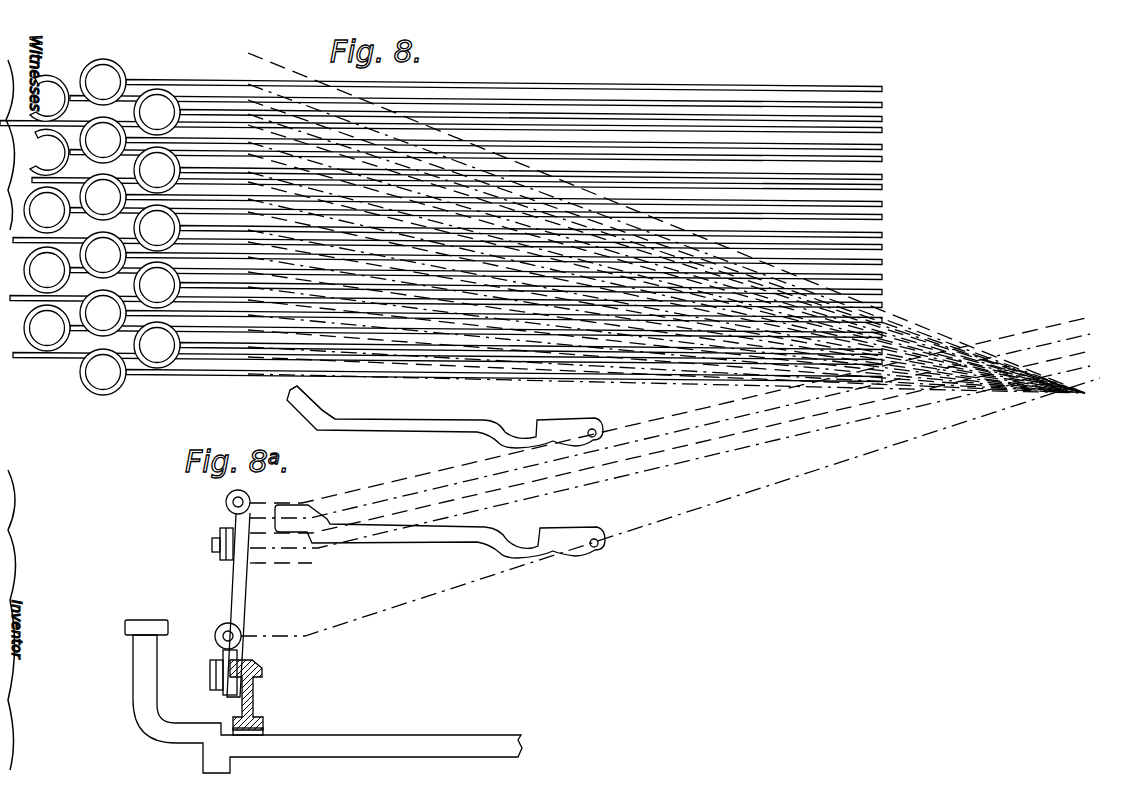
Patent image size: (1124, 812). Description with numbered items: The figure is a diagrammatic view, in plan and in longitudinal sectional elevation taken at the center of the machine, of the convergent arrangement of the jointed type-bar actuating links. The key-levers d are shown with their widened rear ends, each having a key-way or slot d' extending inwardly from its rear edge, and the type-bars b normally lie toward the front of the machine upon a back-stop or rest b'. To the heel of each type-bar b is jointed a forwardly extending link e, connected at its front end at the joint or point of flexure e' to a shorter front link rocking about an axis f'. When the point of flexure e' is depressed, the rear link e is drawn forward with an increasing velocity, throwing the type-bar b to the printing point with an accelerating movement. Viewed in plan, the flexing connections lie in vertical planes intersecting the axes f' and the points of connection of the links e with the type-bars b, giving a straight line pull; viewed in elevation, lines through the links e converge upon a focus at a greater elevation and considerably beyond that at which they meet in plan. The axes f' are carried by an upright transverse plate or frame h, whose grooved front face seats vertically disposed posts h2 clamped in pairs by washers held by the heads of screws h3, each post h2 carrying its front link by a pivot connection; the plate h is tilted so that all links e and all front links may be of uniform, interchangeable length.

In FIG. 8, the key-lever d is at (441, 219).
In FIG. 8A, the key-lever d is at (323, 696).
In FIG. 8, the key-way or slot d' is at (102, 227).
In FIG. 8, the axis f' is at (281, 400).
In FIG. 8A, the axis f' is at (220, 593).
In FIG. 8, the joint or point of flexure e' is at (666, 226).
In FIG. 8A, the joint or point of flexure e' is at (670, 533).
In FIG. 8, the back-stop or rest b' is at (445, 419).
In FIG. 8A, the link e is at (670, 432).
In FIG. 8A, the type-bar b is at (440, 541).
In FIG. 8A, the upright transverse plate or frame h is at (268, 708).
In FIG. 8A, the post h2 is at (228, 692).
In FIG. 8A, the screw h3 is at (212, 680).